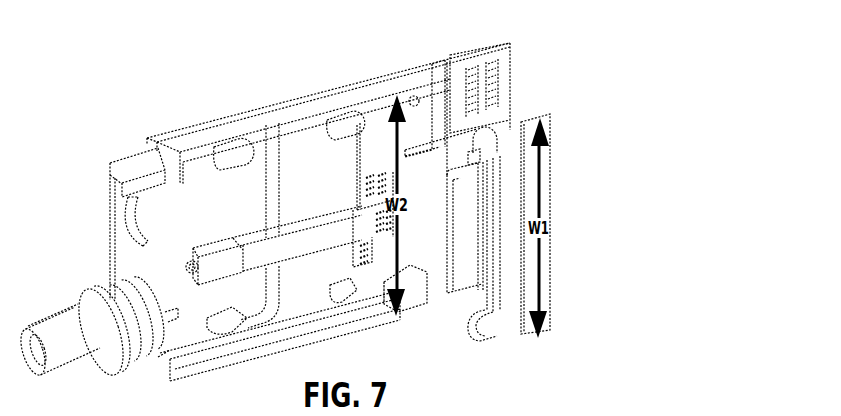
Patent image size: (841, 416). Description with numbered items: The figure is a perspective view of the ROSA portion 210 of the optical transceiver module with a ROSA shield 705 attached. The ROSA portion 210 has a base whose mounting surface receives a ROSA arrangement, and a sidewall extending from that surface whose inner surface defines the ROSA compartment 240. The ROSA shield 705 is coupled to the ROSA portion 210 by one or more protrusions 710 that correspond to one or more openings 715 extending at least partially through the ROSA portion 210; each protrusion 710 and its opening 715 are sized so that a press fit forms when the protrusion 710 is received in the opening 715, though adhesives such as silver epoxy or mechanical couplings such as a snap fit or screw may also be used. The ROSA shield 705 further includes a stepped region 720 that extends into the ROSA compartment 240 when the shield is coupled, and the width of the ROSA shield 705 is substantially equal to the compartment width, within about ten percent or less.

The ROSA portion 210 is at (162, 52).
The ROSA compartment 240 is at (320, 110).
The ROSA shield 705 is at (505, 323).
The protrusion 710 is at (464, 322).
The opening 715 is at (413, 100).
The stepped region 720 is at (493, 182).